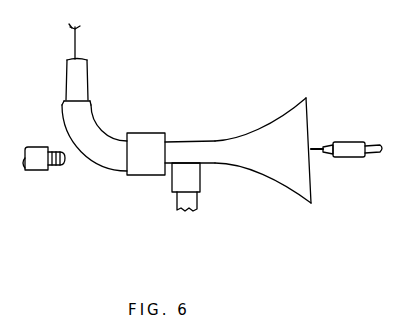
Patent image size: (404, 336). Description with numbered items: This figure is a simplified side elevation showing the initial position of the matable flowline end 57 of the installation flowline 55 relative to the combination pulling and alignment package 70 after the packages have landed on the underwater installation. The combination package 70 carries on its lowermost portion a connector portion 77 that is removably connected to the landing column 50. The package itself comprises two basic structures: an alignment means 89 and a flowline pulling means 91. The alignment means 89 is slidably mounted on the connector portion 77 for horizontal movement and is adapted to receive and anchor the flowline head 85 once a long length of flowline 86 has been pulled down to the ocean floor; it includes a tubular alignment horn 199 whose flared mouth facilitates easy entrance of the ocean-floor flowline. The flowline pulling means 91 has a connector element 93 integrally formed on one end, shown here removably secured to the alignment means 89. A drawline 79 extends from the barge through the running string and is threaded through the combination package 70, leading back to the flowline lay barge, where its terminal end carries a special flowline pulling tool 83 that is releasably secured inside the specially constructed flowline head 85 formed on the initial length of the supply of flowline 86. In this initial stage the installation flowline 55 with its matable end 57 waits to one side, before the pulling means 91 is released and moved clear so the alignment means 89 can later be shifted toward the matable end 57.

The drawline 79 is at (79, 34).
The flowline pulling means 91 is at (107, 129).
The combination pulling and alignment package 70 is at (187, 134).
The alignment means 89 is at (228, 136).
The connector element 93 is at (154, 164).
The tubular alignment horn 199 is at (278, 161).
The connector portion 77 is at (190, 181).
The landing column 50 is at (187, 201).
The installation flowline 55 is at (45, 172).
The matable flowline end 57 is at (58, 166).
The flowline pulling tool 83 is at (331, 157).
The flowline head 85 is at (355, 143).
The flowline 86 is at (369, 155).